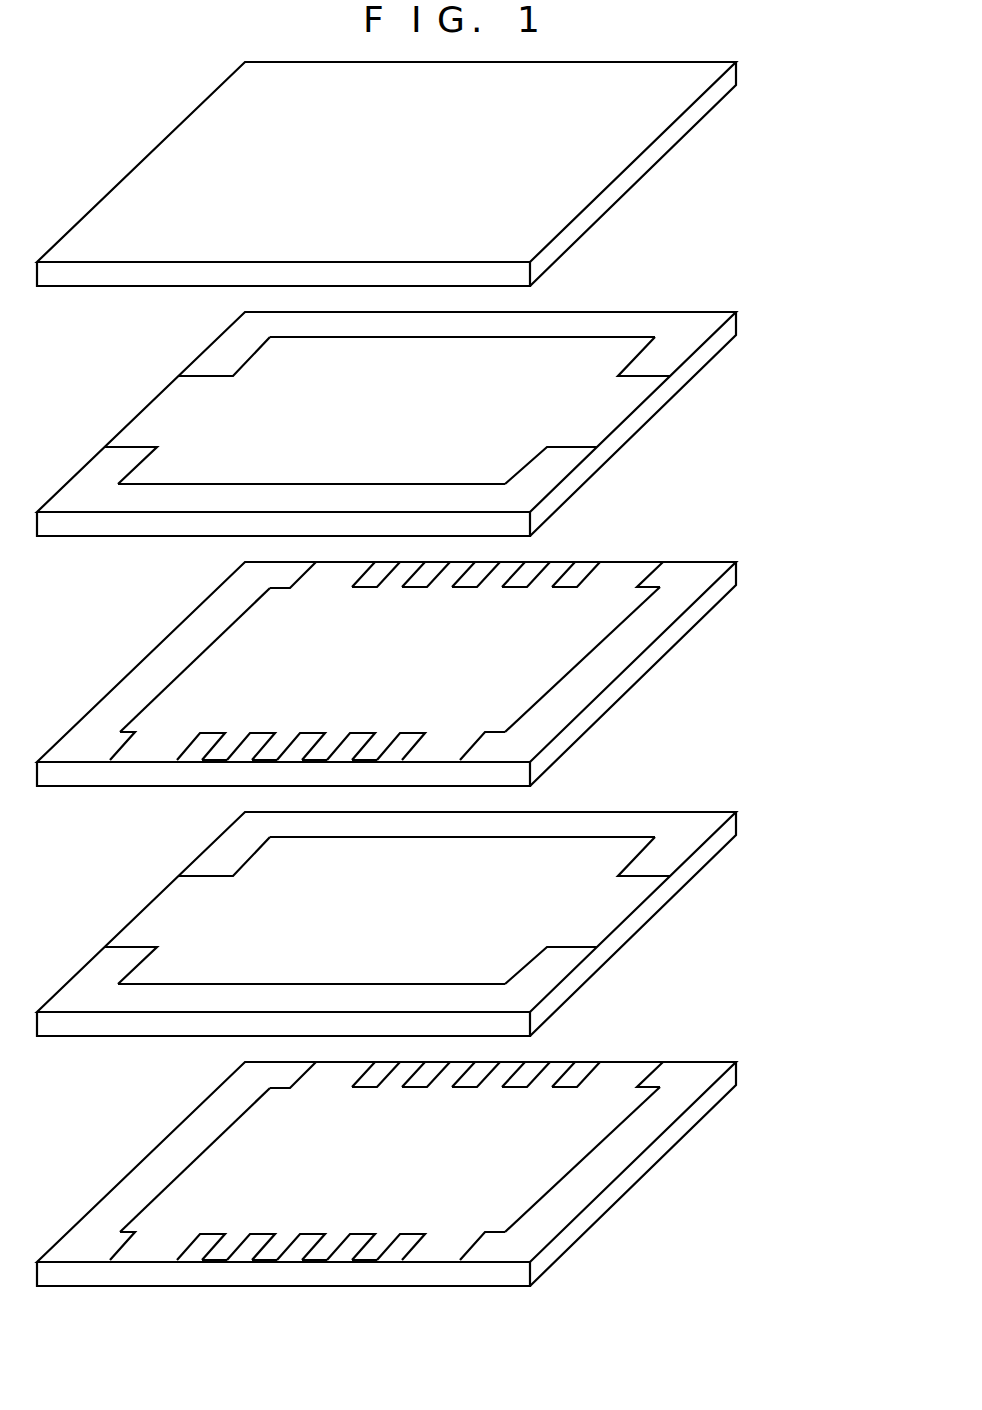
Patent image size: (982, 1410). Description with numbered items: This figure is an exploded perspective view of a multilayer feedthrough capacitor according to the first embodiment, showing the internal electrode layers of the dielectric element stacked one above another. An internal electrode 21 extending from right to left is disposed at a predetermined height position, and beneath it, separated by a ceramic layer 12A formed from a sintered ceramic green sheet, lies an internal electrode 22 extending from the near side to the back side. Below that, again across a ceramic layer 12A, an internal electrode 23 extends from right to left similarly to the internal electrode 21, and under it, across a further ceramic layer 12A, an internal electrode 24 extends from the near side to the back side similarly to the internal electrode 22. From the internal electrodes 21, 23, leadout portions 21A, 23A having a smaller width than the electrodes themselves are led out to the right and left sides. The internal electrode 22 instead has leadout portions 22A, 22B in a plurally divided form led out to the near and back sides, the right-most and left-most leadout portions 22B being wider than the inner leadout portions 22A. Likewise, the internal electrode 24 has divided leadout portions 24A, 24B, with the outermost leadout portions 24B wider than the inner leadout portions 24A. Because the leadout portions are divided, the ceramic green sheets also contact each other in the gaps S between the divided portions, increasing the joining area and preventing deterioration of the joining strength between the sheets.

The ceramic layer 12A is at (558, 177).
The internal electrode 21 is at (610, 337).
The leadout portion 21A is at (203, 376).
The internal electrode 22 is at (658, 572).
The leadout portion 22A is at (512, 567).
The leadout portion 22B is at (330, 578).
The internal electrode 23 is at (617, 835).
The leadout portion 23A is at (203, 876).
The internal electrode 24 is at (658, 1072).
The leadout portion 24A is at (512, 1067).
The leadout portion 24B is at (330, 1078).
The gap S is at (435, 570).